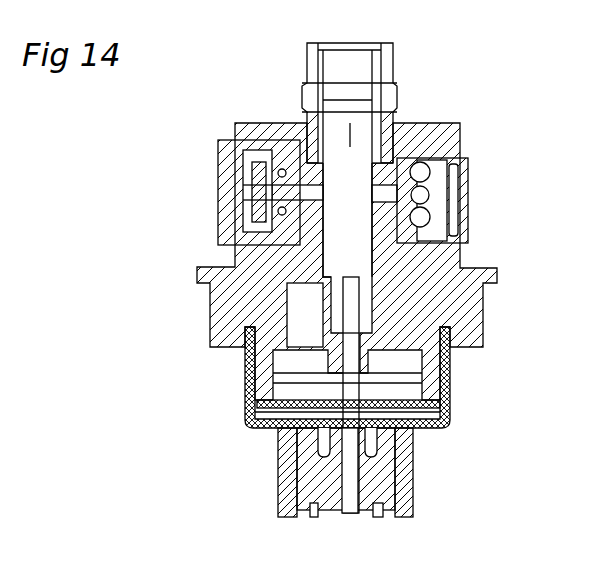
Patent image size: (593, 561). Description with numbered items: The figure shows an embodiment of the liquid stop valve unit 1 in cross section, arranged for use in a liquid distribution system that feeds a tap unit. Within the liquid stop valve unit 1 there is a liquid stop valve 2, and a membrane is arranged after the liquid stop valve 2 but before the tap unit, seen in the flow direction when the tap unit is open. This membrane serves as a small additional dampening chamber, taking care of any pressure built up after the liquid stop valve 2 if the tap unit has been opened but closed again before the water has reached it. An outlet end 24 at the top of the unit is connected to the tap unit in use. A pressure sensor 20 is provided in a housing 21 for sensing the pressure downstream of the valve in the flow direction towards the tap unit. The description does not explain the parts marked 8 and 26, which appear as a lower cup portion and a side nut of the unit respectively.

The liquid stop valve unit 1 is at (470, 404).
The liquid stop valve 2 is at (412, 496).
The cup / sensing element housing 8 is at (432, 432).
The pressure sensor 20 is at (222, 212).
The housing 21 is at (290, 513).
The outlet end 24 is at (400, 70).
The side nut 26 is at (471, 184).